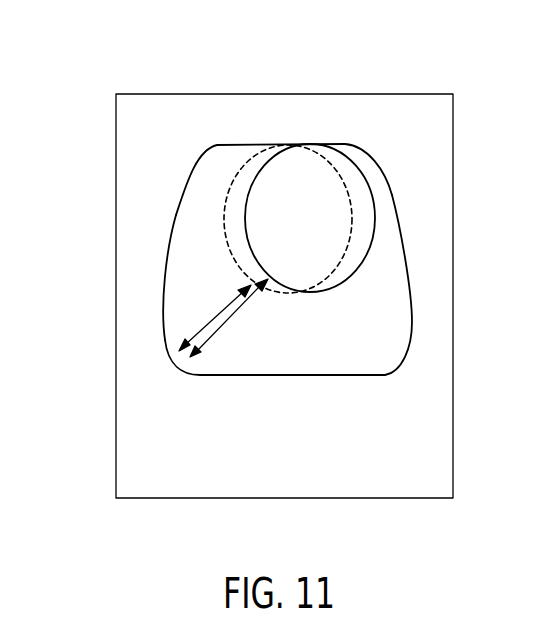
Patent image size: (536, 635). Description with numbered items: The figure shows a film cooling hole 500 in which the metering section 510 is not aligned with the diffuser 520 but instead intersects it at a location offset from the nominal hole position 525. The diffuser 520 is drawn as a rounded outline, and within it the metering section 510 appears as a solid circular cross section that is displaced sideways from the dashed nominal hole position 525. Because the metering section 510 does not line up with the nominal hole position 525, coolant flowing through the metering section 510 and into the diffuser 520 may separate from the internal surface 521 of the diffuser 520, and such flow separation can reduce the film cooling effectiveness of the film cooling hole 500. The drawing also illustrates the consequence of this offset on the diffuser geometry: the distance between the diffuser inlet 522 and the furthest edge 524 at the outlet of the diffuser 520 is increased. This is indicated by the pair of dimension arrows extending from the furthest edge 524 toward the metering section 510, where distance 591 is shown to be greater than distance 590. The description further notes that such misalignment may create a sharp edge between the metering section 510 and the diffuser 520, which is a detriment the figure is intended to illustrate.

The film cooling hole 500 is at (216, 150).
The metering section 510 is at (363, 258).
The diffuser 520 is at (403, 355).
The internal surface 521 is at (189, 319).
The diffuser inlet 522 is at (353, 277).
The furthest edge 524 is at (186, 357).
The nominal hole position 525 is at (224, 220).
The distance 590 is at (205, 326).
The distance 591 is at (228, 318).